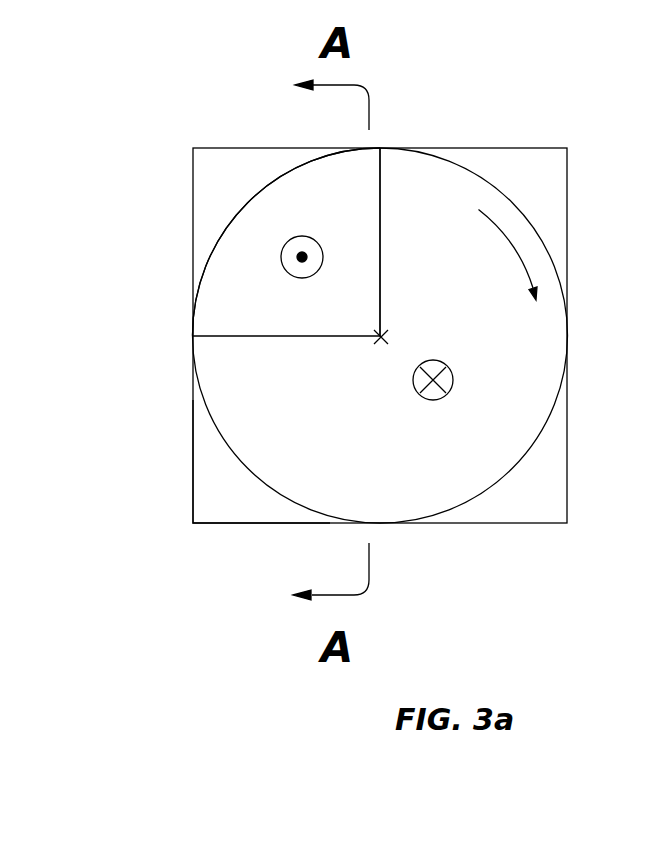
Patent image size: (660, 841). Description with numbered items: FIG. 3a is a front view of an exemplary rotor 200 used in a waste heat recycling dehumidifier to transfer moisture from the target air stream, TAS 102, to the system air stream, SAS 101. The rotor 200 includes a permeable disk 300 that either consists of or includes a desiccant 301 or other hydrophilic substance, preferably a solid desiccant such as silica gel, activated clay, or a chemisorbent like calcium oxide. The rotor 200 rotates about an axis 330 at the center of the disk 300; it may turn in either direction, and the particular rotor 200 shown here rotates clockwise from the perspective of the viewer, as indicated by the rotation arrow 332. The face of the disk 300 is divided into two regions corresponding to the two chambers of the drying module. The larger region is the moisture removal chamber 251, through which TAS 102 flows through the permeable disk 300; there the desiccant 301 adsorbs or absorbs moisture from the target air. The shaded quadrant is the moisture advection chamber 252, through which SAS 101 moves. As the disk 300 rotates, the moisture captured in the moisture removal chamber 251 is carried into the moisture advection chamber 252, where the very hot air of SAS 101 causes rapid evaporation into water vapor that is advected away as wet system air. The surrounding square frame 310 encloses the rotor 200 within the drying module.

The rotor 200 is at (260, 193).
The disk 300 is at (475, 175).
The desiccant 301 is at (413, 197).
The axis 330 is at (392, 318).
The rotation direction arrow 332 is at (517, 252).
The SAS 101 is at (295, 277).
The TAS 102 is at (427, 402).
The moisture advection chamber 252 is at (225, 190).
The moisture removal chamber 251 is at (215, 472).
The square frame 310 is at (517, 525).